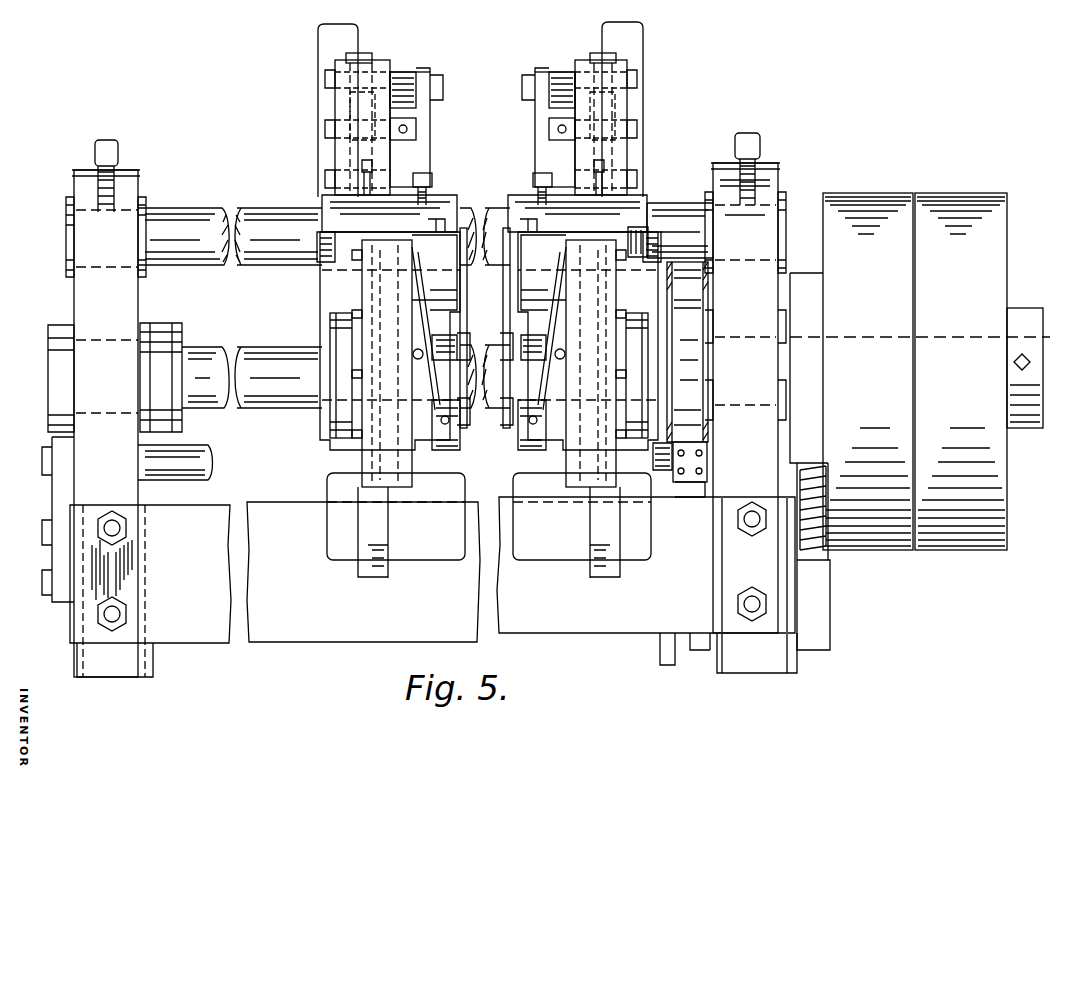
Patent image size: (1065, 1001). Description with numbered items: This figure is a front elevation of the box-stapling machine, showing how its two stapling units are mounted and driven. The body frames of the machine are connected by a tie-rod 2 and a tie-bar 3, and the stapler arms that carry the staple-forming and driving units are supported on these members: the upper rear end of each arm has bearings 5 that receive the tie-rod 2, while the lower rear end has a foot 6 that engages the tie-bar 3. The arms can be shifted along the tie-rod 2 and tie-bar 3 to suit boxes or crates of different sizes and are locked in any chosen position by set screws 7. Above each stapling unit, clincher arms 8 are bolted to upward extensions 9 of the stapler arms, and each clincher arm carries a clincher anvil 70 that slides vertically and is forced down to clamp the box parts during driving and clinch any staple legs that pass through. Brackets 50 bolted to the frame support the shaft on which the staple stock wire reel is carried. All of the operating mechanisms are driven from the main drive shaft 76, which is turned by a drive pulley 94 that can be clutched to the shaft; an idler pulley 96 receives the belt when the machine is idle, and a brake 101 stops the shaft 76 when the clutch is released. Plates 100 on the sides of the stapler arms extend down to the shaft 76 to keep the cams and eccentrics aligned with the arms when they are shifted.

The tie-rod 2 is at (685, 205).
The tie-bar 3 is at (632, 620).
The bearings 5 is at (393, 196).
The foot 6 is at (462, 492).
The set screws 7 is at (435, 185).
The clincher arms 8 is at (340, 104).
The upward extensions 9 is at (330, 40).
The brackets 50 is at (62, 490).
The clincher anvil 70 is at (370, 56).
The main drive shaft 76 is at (270, 352).
The drive pulley 94 is at (955, 198).
The idler pulley 96 is at (848, 198).
The plates 100 is at (322, 300).
The brake 101 is at (690, 447).